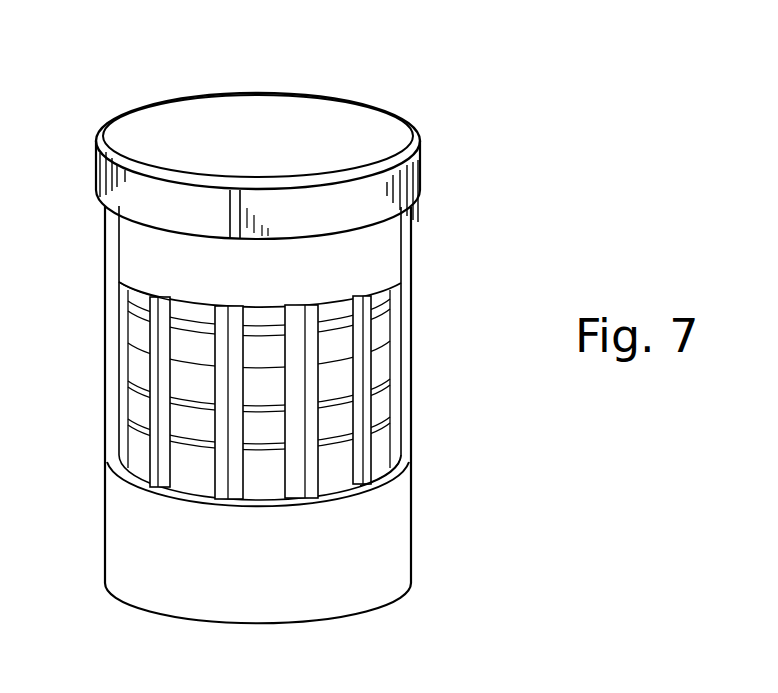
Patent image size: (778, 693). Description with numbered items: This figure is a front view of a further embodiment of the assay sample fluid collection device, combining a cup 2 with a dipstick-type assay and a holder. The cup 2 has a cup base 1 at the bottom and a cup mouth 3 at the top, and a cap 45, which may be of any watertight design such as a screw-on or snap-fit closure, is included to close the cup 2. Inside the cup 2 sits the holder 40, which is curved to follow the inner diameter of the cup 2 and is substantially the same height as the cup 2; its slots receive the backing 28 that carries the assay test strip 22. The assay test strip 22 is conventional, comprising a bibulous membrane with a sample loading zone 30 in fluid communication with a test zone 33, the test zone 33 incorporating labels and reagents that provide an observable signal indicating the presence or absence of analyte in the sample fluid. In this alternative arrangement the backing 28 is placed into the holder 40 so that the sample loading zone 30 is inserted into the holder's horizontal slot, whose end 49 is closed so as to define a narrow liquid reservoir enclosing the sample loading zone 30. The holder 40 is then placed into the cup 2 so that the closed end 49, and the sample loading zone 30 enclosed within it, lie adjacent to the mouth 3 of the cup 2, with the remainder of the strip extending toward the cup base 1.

The cup base 1 is at (350, 620).
The cup 2 is at (132, 242).
The cup mouth 3 is at (297, 144).
The assay test strip 22 is at (216, 388).
The backing 28 is at (233, 357).
The sample loading zone 30 is at (168, 298).
The test zone 33 is at (190, 388).
The holder 40 is at (398, 486).
The cap 45 is at (362, 116).
The end 49 is at (378, 254).